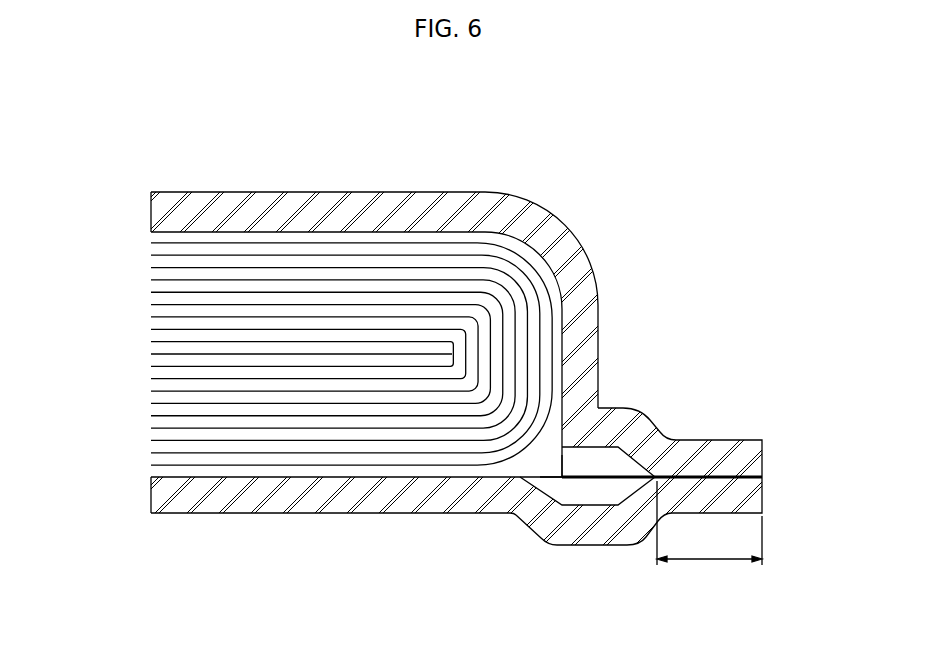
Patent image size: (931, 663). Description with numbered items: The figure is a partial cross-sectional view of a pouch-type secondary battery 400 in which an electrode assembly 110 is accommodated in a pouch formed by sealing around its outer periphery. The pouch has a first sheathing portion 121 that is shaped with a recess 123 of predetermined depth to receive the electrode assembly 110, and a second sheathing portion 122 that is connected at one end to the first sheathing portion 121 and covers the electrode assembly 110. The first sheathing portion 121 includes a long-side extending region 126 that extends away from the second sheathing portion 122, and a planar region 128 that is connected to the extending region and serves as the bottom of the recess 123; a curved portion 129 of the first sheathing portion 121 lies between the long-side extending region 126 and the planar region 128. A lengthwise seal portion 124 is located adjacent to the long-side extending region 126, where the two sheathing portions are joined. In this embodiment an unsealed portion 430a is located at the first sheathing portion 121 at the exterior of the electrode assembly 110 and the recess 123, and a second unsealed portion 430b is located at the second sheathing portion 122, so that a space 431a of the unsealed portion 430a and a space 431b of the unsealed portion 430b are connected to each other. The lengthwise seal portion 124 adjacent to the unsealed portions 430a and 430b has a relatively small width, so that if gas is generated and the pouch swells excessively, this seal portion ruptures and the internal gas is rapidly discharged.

The secondary battery 400 is at (733, 134).
The first sheathing portion 121 is at (149, 188).
The planar region 128 is at (323, 203).
The curved portion 129 is at (560, 236).
The long-side extending region 126 is at (594, 328).
The second sheathing portion 122 is at (358, 507).
The recess 123 is at (547, 455).
The electrode assembly 110 is at (138, 346).
The lengthwise seal portion 124 is at (764, 474).
The unsealed portion 430a is at (656, 407).
The unsealed portion 430b is at (597, 552).
The space 431a is at (617, 465).
The space 431b is at (580, 493).